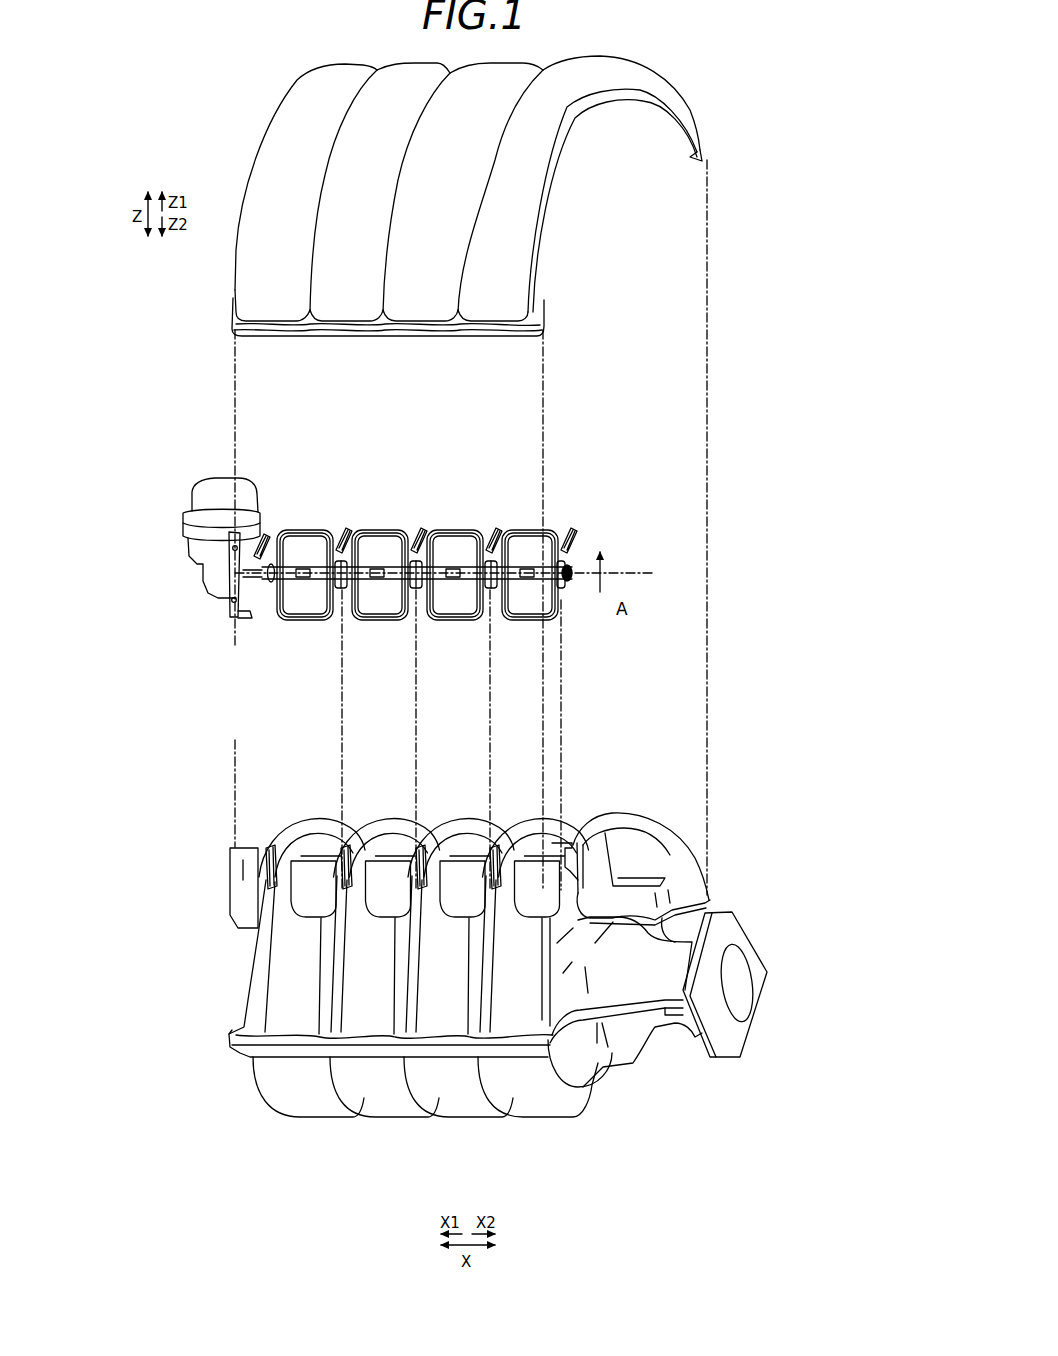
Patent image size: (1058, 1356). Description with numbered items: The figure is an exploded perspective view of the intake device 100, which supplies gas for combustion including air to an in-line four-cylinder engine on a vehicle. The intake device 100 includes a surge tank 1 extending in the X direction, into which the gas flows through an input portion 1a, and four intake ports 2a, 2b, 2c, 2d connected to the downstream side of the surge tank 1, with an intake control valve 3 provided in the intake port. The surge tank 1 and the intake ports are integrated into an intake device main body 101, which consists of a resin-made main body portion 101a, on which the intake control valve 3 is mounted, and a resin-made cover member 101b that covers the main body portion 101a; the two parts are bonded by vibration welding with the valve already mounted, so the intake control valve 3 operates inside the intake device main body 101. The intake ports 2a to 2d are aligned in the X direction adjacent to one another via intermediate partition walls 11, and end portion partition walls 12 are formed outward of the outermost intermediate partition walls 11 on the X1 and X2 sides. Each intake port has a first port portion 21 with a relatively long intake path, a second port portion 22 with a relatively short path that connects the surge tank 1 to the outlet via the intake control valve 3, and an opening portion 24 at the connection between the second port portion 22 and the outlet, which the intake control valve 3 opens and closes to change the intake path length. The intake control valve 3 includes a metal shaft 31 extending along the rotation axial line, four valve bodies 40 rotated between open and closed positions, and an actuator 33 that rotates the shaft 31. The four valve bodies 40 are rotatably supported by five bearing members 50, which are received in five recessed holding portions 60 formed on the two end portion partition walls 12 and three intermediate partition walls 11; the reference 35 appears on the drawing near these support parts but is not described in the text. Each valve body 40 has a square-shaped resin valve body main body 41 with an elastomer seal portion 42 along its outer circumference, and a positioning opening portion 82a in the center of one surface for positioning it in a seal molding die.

The intake device 100 is at (760, 87).
The intake device main body 101 is at (809, 135).
The main body portion 101a is at (723, 826).
The cover member 101b is at (690, 110).
The intake control valve 3 is at (196, 452).
The actuator 33 is at (207, 490).
The shaft 31 is at (215, 591).
The bearing member 50 is at (267, 533).
The clip 35 is at (340, 534).
The valve body 40 is at (310, 543).
The valve body main body 41 is at (288, 621).
The seal portion 42 is at (287, 530).
The positioning opening portion 82a is at (303, 578).
The holding portion 60 is at (270, 866).
The second port portion 22 is at (310, 881).
The opening portion 24 is at (303, 915).
The intake port 2a is at (323, 997).
The intake port 2b is at (398, 997).
The intake port 2c is at (472, 997).
The intake port 2d is at (553, 990).
The first port portion 21 is at (282, 1029).
The end portion partition wall 12 is at (255, 967).
The intermediate partition wall 11 is at (317, 1110).
The surge tank 1 is at (633, 1043).
The input portion 1a is at (738, 1008).